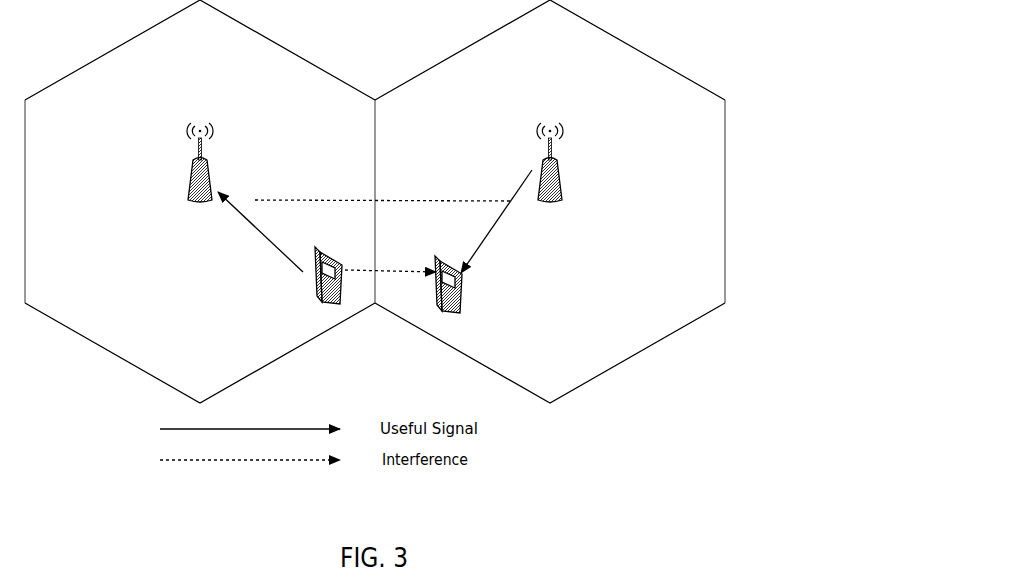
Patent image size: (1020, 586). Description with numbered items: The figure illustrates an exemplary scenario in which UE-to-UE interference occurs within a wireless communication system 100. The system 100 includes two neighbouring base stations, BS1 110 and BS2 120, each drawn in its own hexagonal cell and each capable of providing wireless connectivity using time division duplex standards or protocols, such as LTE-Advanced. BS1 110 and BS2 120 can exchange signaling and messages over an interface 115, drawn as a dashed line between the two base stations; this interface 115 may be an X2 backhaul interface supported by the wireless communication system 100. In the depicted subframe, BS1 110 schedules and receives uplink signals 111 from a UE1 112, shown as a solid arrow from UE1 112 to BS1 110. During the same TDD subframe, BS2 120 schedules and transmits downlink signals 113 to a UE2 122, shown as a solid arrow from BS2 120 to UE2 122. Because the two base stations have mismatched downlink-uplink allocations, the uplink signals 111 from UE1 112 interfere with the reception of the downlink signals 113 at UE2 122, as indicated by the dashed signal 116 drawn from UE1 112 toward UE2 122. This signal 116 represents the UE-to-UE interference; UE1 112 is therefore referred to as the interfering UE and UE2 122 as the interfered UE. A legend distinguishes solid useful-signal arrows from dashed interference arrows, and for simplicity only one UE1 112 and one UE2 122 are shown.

The wireless communication system 100 is at (685, 30).
The BS1 110 is at (188, 168).
The BS2 120 is at (566, 163).
The UE1 112 is at (320, 290).
The UE2 122 is at (467, 302).
The uplink signals 111 is at (260, 232).
The downlink signals 113 is at (496, 221).
The interface 115 is at (381, 188).
The signal 116 is at (390, 261).